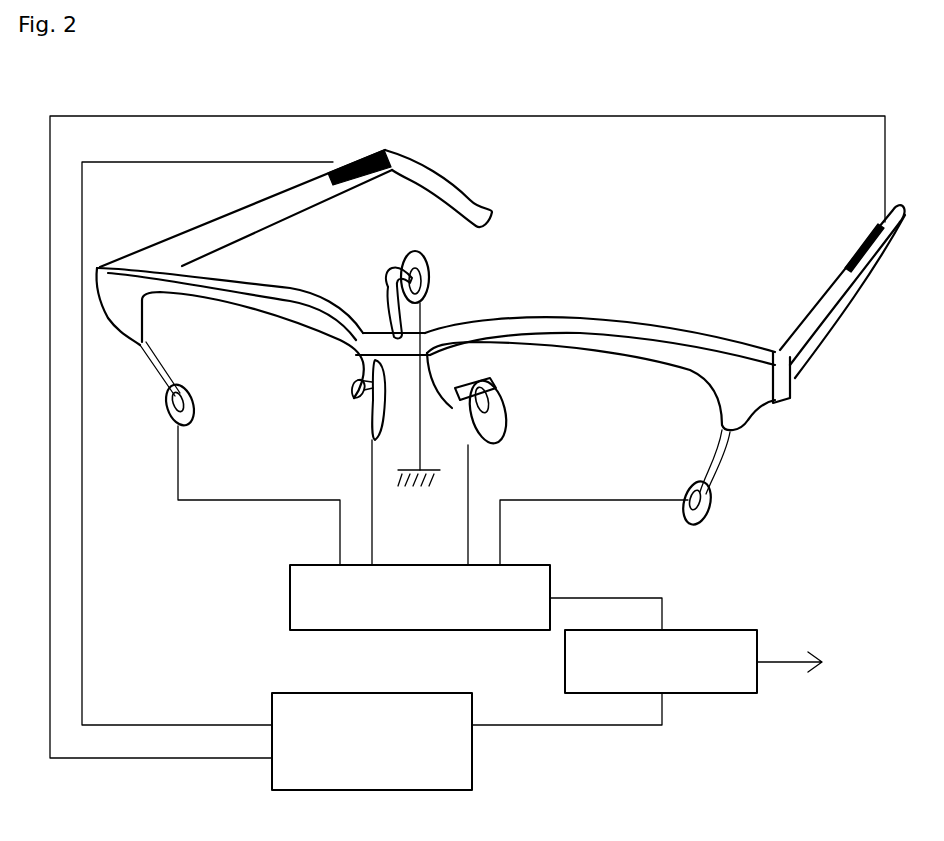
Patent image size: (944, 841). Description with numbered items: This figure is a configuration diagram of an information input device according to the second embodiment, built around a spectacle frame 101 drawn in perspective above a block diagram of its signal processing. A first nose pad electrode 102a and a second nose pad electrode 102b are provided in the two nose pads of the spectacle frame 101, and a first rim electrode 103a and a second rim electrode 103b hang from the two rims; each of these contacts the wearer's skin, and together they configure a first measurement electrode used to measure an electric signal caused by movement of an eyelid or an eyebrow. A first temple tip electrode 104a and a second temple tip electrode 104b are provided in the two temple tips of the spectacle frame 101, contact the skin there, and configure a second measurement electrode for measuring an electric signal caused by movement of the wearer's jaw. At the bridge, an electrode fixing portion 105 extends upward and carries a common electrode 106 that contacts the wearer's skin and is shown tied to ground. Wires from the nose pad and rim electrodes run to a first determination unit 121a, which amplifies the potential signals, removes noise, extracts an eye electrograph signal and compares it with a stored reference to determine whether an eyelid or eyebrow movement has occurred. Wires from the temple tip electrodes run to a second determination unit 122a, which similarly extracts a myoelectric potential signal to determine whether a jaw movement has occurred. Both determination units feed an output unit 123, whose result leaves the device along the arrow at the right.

The spectacle frame 101 is at (584, 262).
The first nose pad electrode 102a is at (372, 418).
The second nose pad electrode 102b is at (505, 424).
The first rim electrode 103a is at (194, 394).
The second rim electrode 103b is at (716, 500).
The first temple tip electrode 104a is at (360, 186).
The second temple tip electrode 104b is at (866, 243).
The electrode fixing portion 105 is at (386, 276).
The common electrode 106 is at (432, 278).
The first determination unit 121a is at (290, 598).
The second determination unit 122a is at (372, 693).
The output unit 123 is at (692, 630).